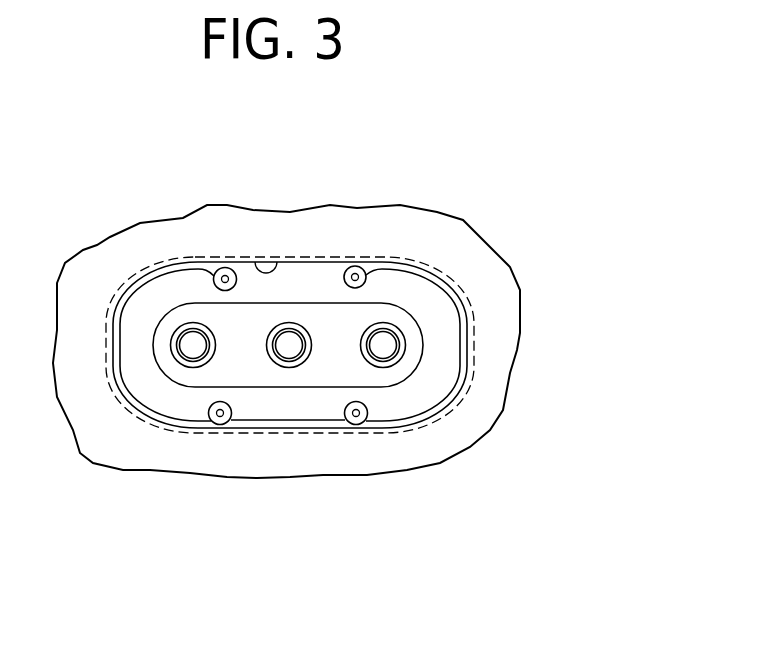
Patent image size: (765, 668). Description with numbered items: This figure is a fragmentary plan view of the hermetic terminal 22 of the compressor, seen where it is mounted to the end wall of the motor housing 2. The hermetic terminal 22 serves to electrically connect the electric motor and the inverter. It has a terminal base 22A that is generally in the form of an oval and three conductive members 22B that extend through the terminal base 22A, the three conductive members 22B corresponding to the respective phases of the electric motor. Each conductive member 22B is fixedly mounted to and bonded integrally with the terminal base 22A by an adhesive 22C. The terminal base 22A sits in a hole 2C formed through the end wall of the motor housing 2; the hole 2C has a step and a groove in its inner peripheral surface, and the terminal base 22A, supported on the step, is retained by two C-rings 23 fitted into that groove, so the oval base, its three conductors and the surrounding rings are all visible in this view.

The motor housing 2 is at (225, 235).
The hole 2C is at (257, 260).
The hermetic terminal 22 is at (305, 260).
The terminal base 22A is at (338, 262).
The conductive member 22B is at (178, 362).
The adhesive 22C is at (190, 363).
The C-ring 23 is at (129, 326).